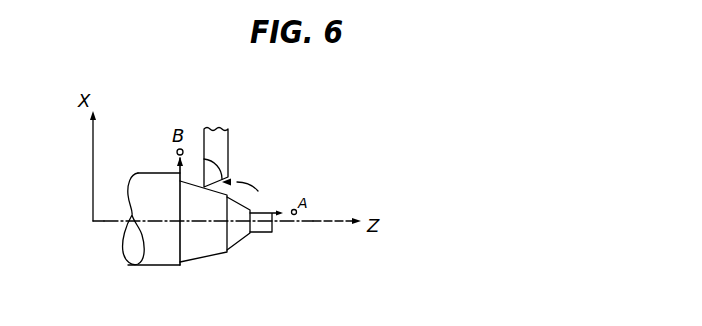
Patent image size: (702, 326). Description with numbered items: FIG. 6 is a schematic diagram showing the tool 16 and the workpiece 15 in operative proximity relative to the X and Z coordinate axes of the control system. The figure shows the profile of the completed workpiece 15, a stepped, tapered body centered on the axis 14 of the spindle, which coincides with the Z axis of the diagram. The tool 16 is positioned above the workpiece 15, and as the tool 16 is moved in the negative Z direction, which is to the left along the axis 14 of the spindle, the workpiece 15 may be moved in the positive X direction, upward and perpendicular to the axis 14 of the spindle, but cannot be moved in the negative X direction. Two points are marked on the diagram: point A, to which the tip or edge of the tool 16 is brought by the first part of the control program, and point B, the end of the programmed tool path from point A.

The axis of the spindle 14 is at (322, 222).
The workpiece 15 is at (203, 255).
The tool 16 is at (227, 140).